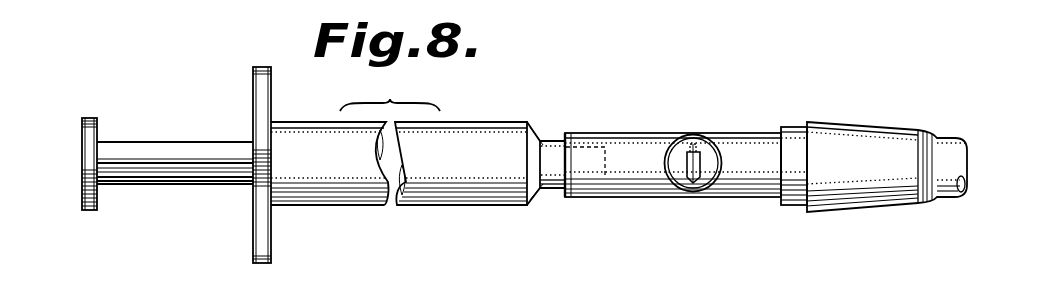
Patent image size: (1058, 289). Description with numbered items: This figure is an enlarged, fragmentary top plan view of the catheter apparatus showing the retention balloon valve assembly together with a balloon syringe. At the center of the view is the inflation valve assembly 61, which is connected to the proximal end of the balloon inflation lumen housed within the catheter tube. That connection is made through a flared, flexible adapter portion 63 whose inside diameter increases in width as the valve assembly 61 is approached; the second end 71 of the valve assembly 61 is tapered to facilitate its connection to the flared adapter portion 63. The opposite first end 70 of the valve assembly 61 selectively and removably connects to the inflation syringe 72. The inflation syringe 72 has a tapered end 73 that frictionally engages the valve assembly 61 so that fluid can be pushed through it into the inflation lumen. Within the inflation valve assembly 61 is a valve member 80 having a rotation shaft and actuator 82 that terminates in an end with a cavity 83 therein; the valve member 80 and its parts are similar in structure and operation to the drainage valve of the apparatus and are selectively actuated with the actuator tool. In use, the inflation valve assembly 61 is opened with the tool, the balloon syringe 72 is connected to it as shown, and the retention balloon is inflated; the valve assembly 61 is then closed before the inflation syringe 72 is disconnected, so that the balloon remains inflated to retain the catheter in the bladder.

The inflation valve assembly 61 is at (588, 133).
The flared, flexible adapter portion 63 is at (878, 125).
The first end 70 is at (793, 205).
The second end 71 is at (573, 197).
The inflation syringe 72 is at (443, 205).
The tapered end 73 is at (557, 188).
The valve member 80 is at (707, 137).
The rotation shaft and actuator 82 is at (702, 163).
The cavity 83 is at (687, 162).